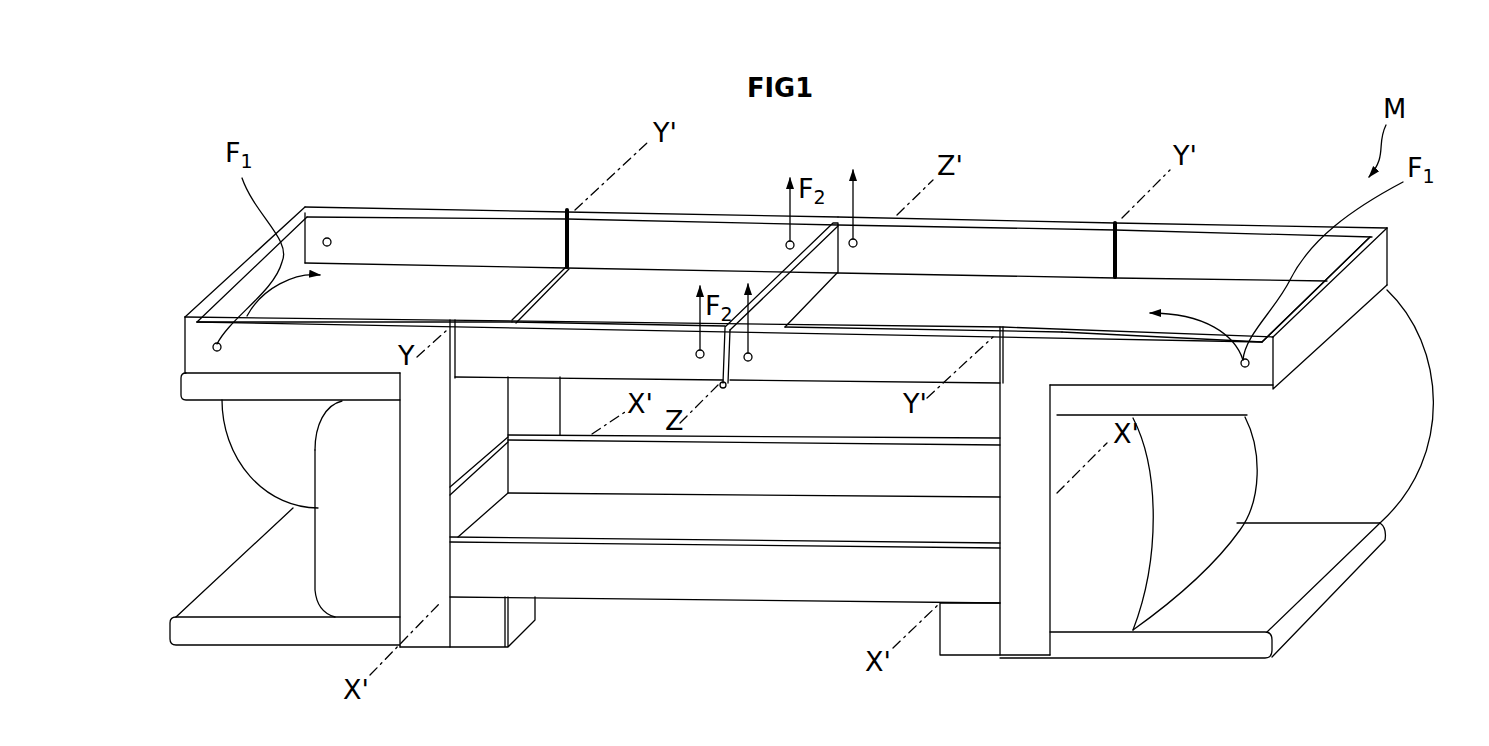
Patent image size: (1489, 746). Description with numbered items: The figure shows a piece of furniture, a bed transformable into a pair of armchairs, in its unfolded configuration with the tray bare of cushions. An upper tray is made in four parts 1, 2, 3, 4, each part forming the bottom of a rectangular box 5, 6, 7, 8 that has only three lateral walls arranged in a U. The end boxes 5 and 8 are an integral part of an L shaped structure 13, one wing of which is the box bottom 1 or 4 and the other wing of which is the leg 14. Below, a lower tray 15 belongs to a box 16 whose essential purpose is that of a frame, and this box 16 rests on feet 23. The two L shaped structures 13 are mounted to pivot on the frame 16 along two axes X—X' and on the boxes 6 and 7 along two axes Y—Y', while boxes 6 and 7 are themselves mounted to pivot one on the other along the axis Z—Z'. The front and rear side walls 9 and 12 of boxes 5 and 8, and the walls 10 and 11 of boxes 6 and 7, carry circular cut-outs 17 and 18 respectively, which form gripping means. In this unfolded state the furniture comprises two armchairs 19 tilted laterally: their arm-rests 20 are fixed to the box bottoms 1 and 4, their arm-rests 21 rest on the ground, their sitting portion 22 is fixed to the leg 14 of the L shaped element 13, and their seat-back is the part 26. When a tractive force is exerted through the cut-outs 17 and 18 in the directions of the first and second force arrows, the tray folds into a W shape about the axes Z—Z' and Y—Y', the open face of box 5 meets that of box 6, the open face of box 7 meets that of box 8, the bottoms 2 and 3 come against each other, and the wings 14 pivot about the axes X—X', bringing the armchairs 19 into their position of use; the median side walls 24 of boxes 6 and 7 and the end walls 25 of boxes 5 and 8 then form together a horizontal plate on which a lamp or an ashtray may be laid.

The box bottom 1 is at (383, 270).
The box bottom 2 is at (675, 297).
The box bottom 3 is at (950, 302).
The box bottom 4 is at (1216, 289).
The end box 5 is at (434, 194).
The box 6 is at (731, 204).
The box 7 is at (1031, 210).
The end box 8 is at (1290, 218).
The front side wall 9 is at (232, 358).
The front side wall 10 is at (589, 358).
The front side wall 11 is at (865, 361).
The side wall 12 is at (1217, 373).
The L shaped structure 13 is at (729, 344).
The wing 14 is at (492, 418).
The lower tray 15 is at (725, 490).
The box 16 is at (721, 609).
The circular cut-out 17 is at (213, 347).
The circular cut-out 18 is at (703, 358).
The armchair 19 is at (243, 468).
The arm-rest 20 is at (218, 390).
The arm-rest 21 is at (222, 630).
The sitting portion 22 is at (345, 597).
The foot 23 is at (492, 635).
The median side wall 24 is at (773, 277).
The end side wall 25 is at (253, 277).
The seat-back 26 is at (815, 515).